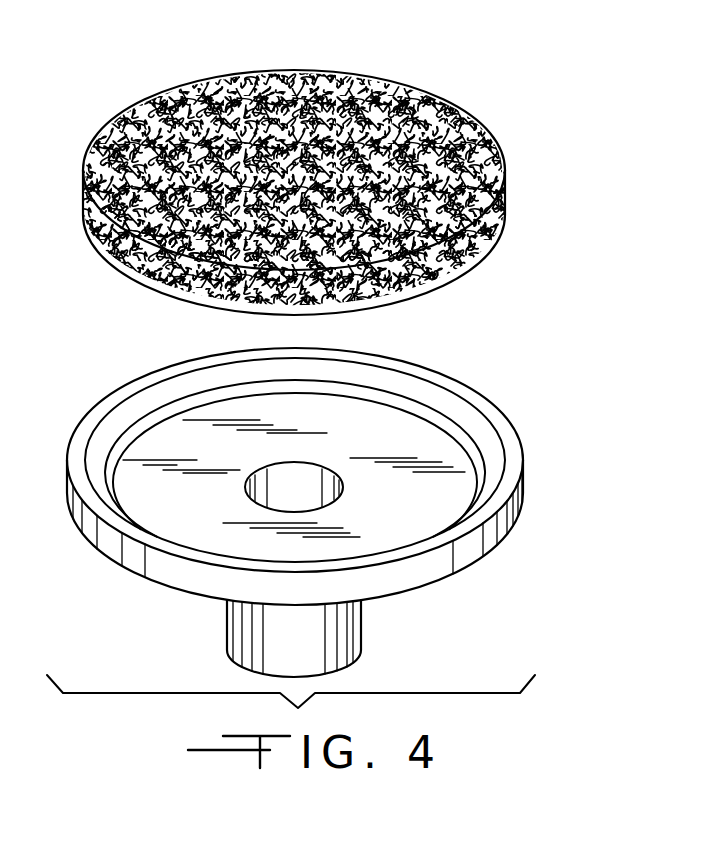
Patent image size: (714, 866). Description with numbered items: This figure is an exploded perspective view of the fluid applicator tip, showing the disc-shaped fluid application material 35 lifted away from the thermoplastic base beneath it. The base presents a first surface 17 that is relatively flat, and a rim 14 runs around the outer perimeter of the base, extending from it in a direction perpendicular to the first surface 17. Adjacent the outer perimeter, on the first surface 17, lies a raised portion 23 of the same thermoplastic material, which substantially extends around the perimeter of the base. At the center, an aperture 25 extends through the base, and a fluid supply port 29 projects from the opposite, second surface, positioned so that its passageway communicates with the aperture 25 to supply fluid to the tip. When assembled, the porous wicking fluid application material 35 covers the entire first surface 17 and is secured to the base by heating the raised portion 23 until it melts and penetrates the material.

The rim 14 is at (522, 492).
The first surface 17 is at (400, 427).
The raised portion 23 is at (467, 438).
The aperture 25 is at (271, 462).
The fluid supply port 29 is at (360, 625).
The fluid application material 35 is at (415, 88).